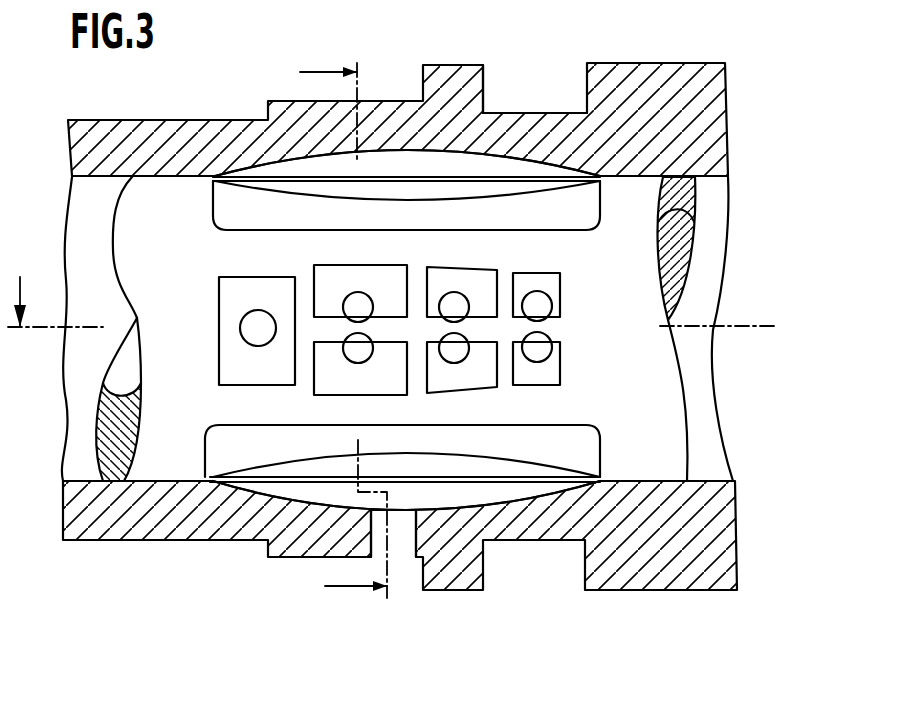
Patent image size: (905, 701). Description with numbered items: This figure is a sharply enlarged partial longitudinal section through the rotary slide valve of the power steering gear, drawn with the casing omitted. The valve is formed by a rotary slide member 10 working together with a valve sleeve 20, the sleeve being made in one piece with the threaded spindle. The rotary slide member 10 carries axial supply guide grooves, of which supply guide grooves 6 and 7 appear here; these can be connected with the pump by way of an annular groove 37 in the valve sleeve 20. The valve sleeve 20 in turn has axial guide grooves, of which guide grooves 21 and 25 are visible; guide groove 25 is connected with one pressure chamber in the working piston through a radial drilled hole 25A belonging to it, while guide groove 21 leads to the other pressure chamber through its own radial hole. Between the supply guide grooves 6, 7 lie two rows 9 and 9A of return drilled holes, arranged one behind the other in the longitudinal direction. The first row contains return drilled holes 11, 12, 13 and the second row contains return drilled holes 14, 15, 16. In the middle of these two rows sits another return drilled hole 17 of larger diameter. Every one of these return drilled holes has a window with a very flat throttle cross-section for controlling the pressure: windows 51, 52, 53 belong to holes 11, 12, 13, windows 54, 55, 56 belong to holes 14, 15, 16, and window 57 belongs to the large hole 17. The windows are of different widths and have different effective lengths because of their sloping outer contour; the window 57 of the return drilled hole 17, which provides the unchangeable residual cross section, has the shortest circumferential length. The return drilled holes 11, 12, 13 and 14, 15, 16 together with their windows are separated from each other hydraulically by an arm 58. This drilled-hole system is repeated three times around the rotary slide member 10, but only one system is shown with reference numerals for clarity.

The supply guide groove 6 is at (570, 207).
The supply guide groove 7 is at (568, 455).
The row of return drilled holes 9 is at (683, 298).
The row of return drilled holes 9A is at (684, 347).
The rotary slide member 10 is at (158, 218).
The return drilled hole 11 is at (352, 303).
The return drilled hole 12 is at (452, 302).
The return drilled hole 13 is at (558, 282).
The return drilled hole 14 is at (355, 350).
The return drilled hole 15 is at (455, 352).
The return drilled hole 16 is at (548, 340).
The return drilled hole 17 is at (257, 325).
The valve sleeve 20 is at (672, 113).
The guide groove 21 is at (400, 163).
The guide groove 25 is at (452, 488).
The radial drilled hole 25A is at (399, 537).
The annular groove 37 is at (487, 99).
The window 51 is at (388, 282).
The window 52 is at (484, 292).
The window 53 is at (558, 302).
The window 54 is at (377, 381).
The window 55 is at (487, 372).
The window 56 is at (548, 372).
The window 57 is at (238, 365).
The arm 58 is at (545, 330).